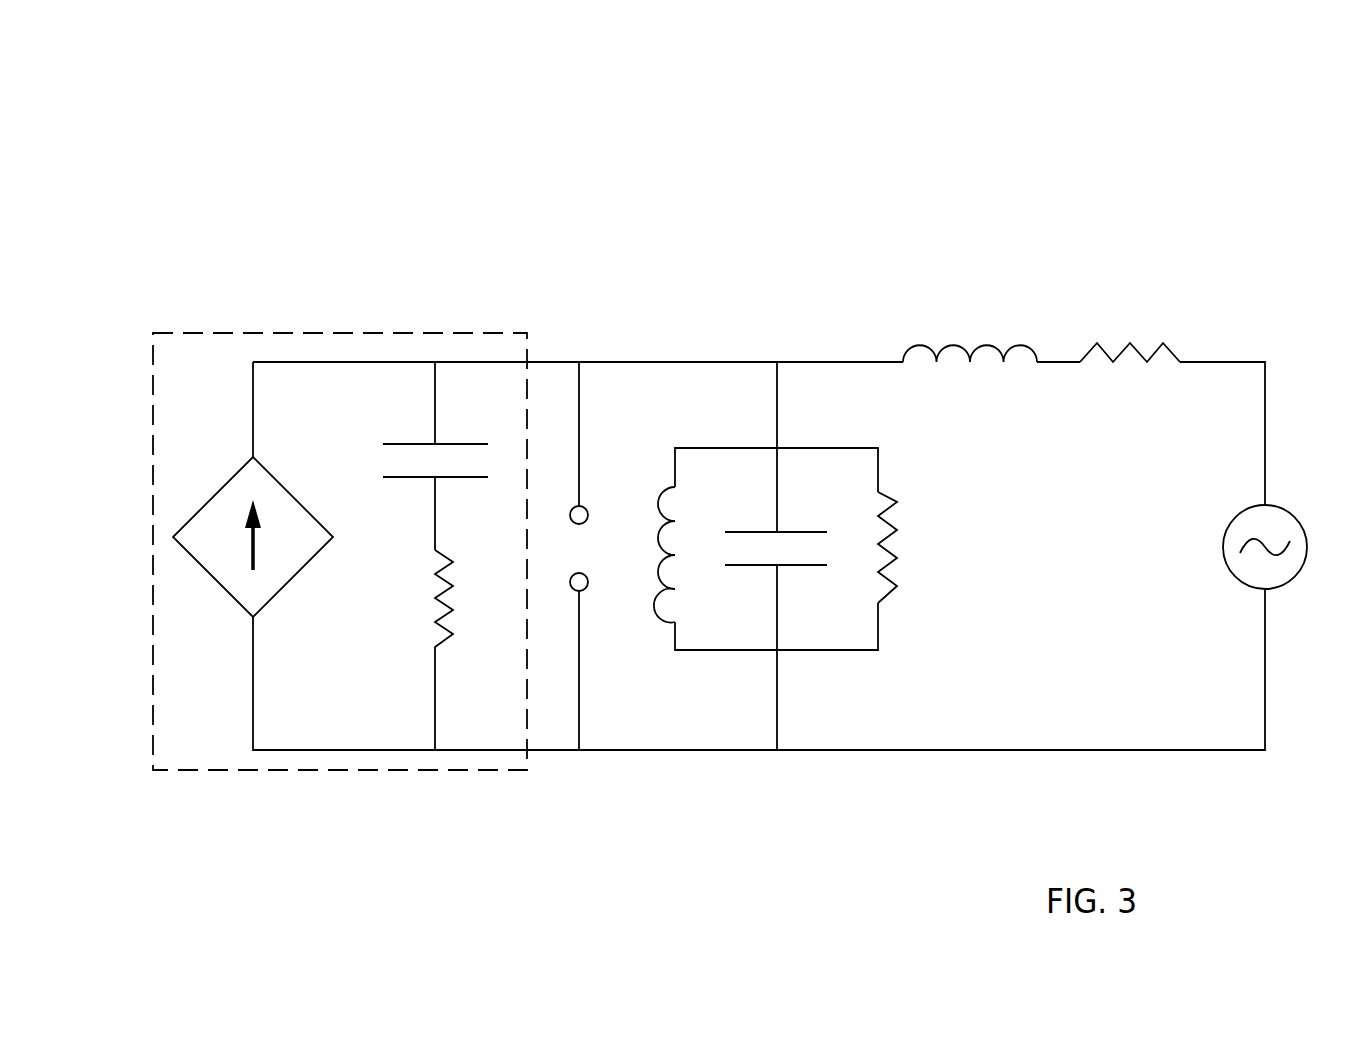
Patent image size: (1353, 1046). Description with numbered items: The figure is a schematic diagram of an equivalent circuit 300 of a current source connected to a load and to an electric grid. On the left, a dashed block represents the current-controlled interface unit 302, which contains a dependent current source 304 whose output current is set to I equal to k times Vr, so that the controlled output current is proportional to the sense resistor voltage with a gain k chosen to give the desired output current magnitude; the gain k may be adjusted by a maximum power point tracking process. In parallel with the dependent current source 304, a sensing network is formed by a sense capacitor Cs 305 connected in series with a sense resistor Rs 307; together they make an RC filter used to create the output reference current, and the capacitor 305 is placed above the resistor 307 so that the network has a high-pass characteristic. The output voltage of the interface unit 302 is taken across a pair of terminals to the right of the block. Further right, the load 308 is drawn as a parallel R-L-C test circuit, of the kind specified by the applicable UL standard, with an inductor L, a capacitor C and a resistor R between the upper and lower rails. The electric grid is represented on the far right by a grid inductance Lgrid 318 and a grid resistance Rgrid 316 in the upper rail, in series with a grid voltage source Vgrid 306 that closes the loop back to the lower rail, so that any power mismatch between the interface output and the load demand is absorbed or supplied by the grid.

The equivalent circuit 300 is at (411, 237).
The current-controlled interface unit 302 is at (273, 771).
The dependent current source 304 is at (280, 592).
The sense capacitor Cs 305 is at (452, 480).
The sense resistor Rs 307 is at (452, 555).
The load 308 is at (797, 651).
The grid resistance Rgrid 316 is at (1113, 362).
The grid inductance Lgrid 318 is at (968, 357).
The grid voltage source Vgrid 306 is at (1223, 547).